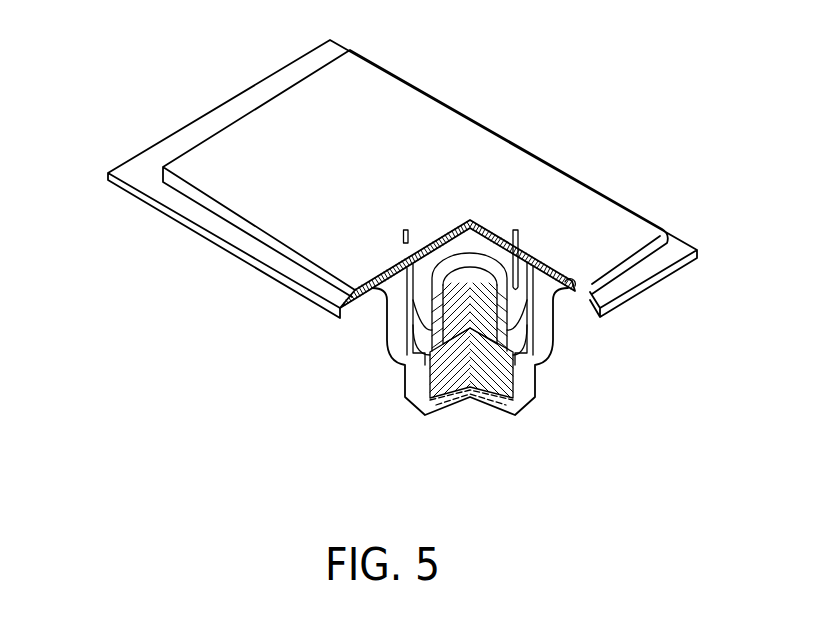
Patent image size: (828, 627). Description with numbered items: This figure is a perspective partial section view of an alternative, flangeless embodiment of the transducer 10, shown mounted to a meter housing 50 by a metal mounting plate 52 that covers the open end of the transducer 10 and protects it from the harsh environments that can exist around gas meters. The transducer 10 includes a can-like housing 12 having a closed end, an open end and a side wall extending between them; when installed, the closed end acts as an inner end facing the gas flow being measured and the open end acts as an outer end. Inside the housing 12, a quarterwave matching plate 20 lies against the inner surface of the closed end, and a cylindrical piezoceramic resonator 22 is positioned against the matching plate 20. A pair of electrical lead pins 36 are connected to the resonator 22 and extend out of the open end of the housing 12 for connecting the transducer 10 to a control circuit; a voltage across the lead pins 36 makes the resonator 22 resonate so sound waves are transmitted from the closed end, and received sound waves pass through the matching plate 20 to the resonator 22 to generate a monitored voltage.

The transducer 10 is at (439, 338).
The housing 12 is at (388, 314).
The matching plate 20 is at (471, 392).
The resonator 22 is at (490, 323).
The electrical lead pins 36 is at (402, 234).
The meter housing 50 is at (207, 237).
The metal mounting plate 52 is at (497, 142).